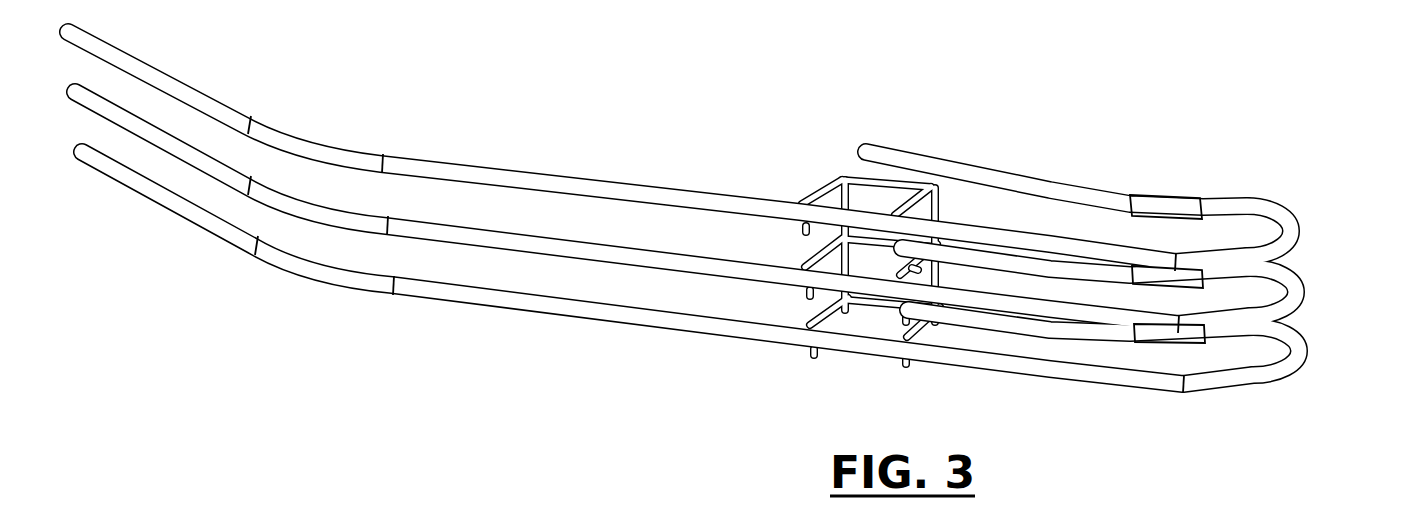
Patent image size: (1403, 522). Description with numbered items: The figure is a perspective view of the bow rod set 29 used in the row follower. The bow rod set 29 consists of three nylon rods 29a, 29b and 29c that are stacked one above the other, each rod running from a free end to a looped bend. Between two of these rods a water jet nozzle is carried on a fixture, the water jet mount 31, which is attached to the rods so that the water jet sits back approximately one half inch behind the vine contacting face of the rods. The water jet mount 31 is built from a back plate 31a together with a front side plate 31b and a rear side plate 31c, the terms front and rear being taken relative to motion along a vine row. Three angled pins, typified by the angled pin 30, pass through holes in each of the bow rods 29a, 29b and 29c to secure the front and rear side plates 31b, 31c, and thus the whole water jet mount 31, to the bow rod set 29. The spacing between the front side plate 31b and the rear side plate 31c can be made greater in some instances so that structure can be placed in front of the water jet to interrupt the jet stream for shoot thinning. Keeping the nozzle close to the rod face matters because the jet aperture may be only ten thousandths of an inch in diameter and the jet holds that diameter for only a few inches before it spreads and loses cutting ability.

The bow rod set 29 is at (726, 228).
The nylon rod 29a is at (1167, 197).
The nylon rod 29b is at (1296, 310).
The nylon rod 29c is at (1236, 393).
The angled pin 30 is at (913, 361).
The water jet mount 31 is at (806, 160).
The back plate 31a is at (885, 193).
The front side plate 31b is at (800, 241).
The rear side plate 31c is at (921, 266).